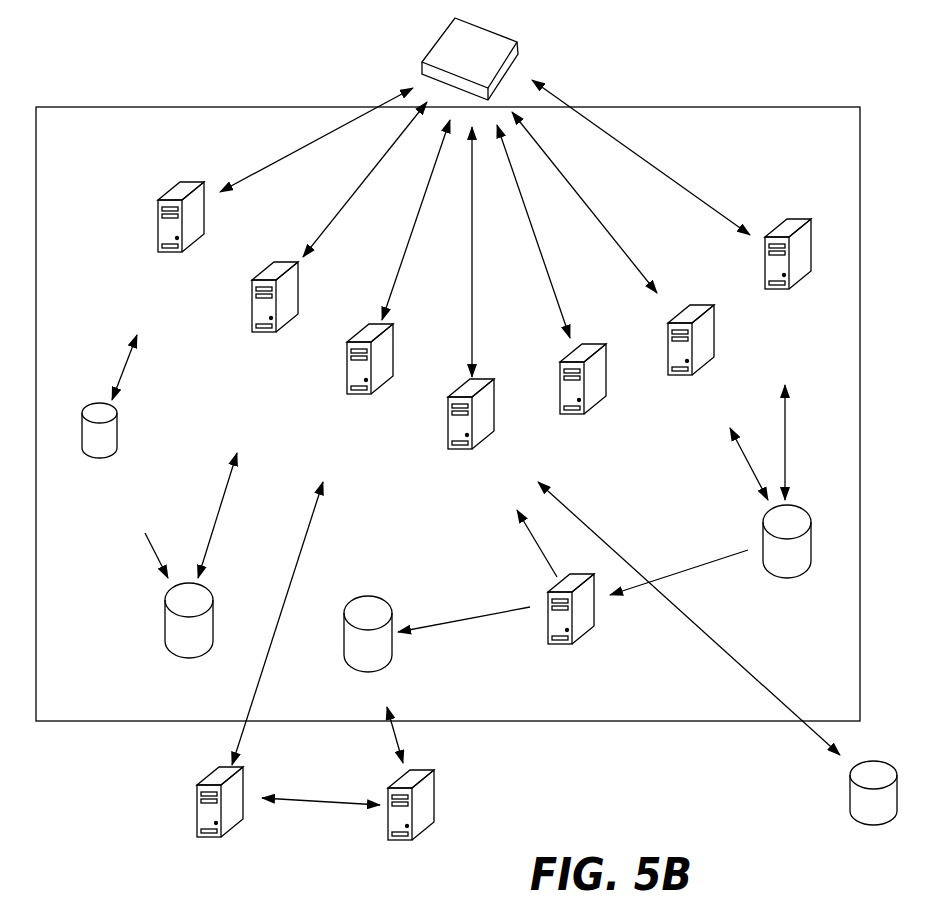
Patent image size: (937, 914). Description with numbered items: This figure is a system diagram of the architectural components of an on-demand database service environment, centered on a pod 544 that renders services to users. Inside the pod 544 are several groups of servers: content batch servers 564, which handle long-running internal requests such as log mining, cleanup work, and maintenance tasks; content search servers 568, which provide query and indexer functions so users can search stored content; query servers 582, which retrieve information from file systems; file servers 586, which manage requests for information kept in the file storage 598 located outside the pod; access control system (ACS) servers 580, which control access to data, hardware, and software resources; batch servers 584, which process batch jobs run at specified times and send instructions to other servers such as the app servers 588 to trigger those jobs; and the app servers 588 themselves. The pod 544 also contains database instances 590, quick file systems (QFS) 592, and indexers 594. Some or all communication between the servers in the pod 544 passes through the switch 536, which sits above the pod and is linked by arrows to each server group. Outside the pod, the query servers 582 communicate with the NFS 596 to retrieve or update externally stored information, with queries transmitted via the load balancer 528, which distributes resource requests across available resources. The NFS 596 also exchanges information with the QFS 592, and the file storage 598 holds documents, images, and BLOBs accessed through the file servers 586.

The switch 536 is at (518, 41).
The pod 544 is at (660, 107).
The content batch servers 564 is at (183, 178).
The content search servers 568 is at (297, 262).
The query servers 582 is at (390, 326).
The file servers 586 is at (480, 378).
The access control system (ACS) servers 580 is at (584, 342).
The batch servers 584 is at (690, 302).
The app servers 588 is at (808, 222).
The database instances 590 is at (117, 425).
The quick file systems (QFS) 592 is at (165, 628).
The indexers 594 is at (590, 630).
The load balancer 528 is at (200, 783).
The NFS 596 is at (433, 797).
The file storage 598 is at (850, 800).